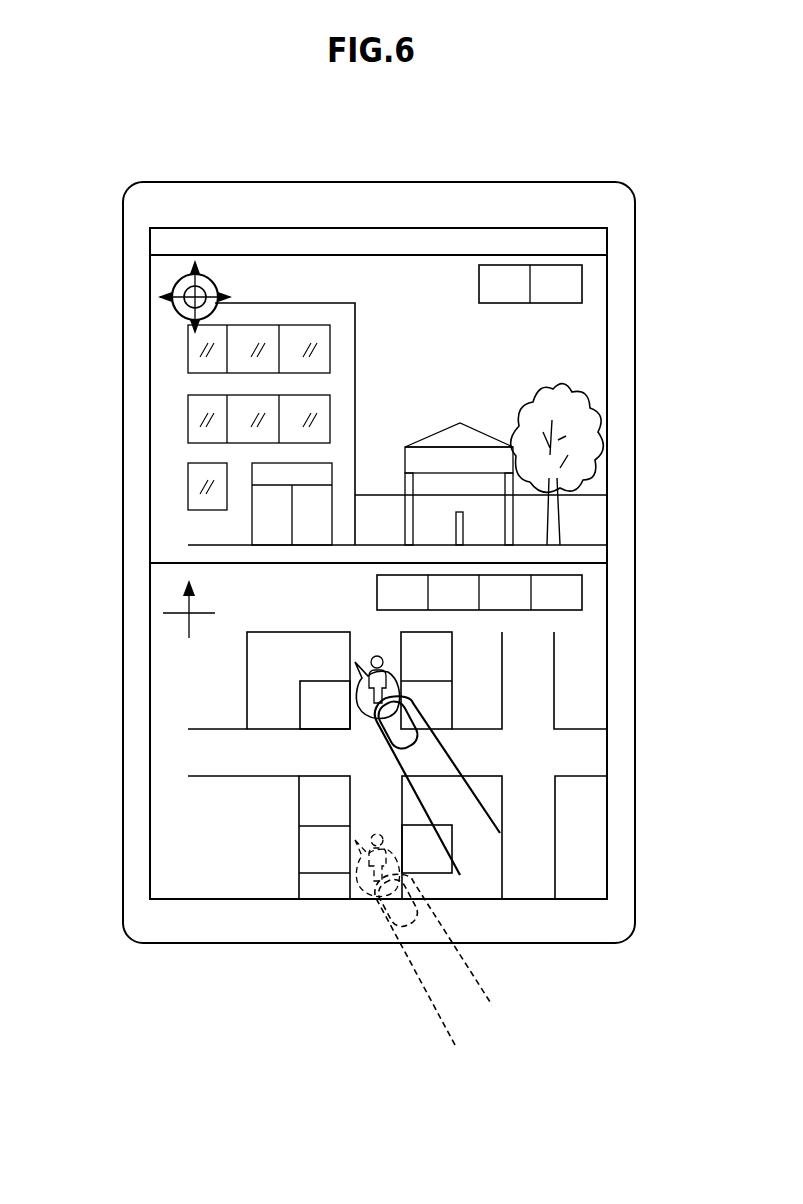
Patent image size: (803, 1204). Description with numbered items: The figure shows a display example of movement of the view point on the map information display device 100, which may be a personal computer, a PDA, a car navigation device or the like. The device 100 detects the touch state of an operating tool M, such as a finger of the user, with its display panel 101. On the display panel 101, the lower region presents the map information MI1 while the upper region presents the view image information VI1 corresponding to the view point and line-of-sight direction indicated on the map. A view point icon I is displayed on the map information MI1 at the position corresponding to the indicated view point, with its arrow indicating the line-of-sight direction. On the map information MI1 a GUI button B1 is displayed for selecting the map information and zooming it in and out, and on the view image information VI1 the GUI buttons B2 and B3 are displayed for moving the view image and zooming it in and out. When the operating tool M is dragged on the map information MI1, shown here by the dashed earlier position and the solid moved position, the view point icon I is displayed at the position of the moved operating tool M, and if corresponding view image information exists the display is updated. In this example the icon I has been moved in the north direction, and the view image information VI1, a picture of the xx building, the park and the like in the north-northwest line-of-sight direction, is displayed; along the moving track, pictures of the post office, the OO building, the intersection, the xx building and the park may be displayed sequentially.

The map information display device 100 is at (570, 181).
The display panel 101 is at (587, 228).
The GUI button B1 is at (582, 590).
The GUI button B2 is at (172, 276).
The GUI button B3 is at (582, 283).
The view image information VI1 is at (585, 337).
The map information MI1 is at (590, 630).
The view point icon I is at (362, 692).
The operating tool M is at (492, 817).